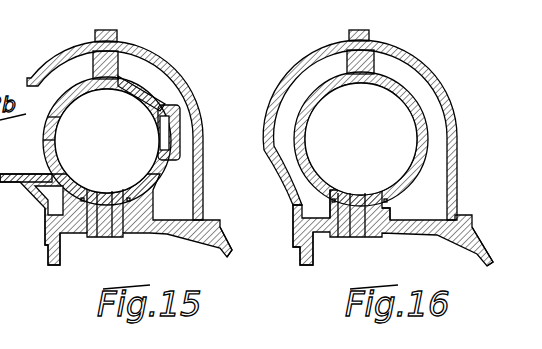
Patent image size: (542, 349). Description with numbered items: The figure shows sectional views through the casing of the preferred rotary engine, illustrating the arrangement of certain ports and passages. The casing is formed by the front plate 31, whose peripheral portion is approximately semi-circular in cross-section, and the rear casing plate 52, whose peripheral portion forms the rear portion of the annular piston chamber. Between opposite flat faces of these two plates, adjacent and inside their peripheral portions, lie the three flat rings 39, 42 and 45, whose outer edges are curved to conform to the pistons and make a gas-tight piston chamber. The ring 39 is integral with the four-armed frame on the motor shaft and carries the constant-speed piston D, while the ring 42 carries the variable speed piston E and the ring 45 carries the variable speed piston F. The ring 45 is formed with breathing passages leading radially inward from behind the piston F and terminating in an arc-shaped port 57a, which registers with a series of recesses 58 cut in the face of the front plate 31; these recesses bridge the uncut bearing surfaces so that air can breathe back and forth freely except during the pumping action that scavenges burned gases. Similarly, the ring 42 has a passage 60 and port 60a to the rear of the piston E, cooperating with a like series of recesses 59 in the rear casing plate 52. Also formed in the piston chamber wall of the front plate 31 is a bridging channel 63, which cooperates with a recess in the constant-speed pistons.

In FIG. 15, the front plate 31 is at (216, 257).
In FIG. 16, the front plate 31 is at (465, 258).
In FIG. 15, the flat ring 39 is at (107, 190).
In FIG. 16, the flat ring 39 is at (356, 236).
In FIG. 15, the flat ring 42 is at (92, 238).
In FIG. 16, the flat ring 42 is at (343, 236).
In FIG. 15, the flat ring 45 is at (124, 238).
In FIG. 16, the flat ring 45 is at (384, 234).
In FIG. 15, the rear casing plate 52 is at (50, 258).
In FIG. 16, the rear casing plate 52 is at (300, 254).
In FIG. 15, the arc-shaped port 57a is at (26, 161).
In FIG. 16, the recesses 58 is at (395, 218).
In FIG. 16, the recesses 59 is at (328, 214).
In FIG. 16, the passage 60 is at (322, 190).
In FIG. 16, the port 60a is at (330, 198).
In FIG. 15, the bridging channel 63 is at (174, 118).
In FIG. 16, the constant-speed piston D is at (359, 190).
In FIG. 16, the variable speed piston E is at (342, 190).
In FIG. 16, the variable speed piston F is at (373, 190).